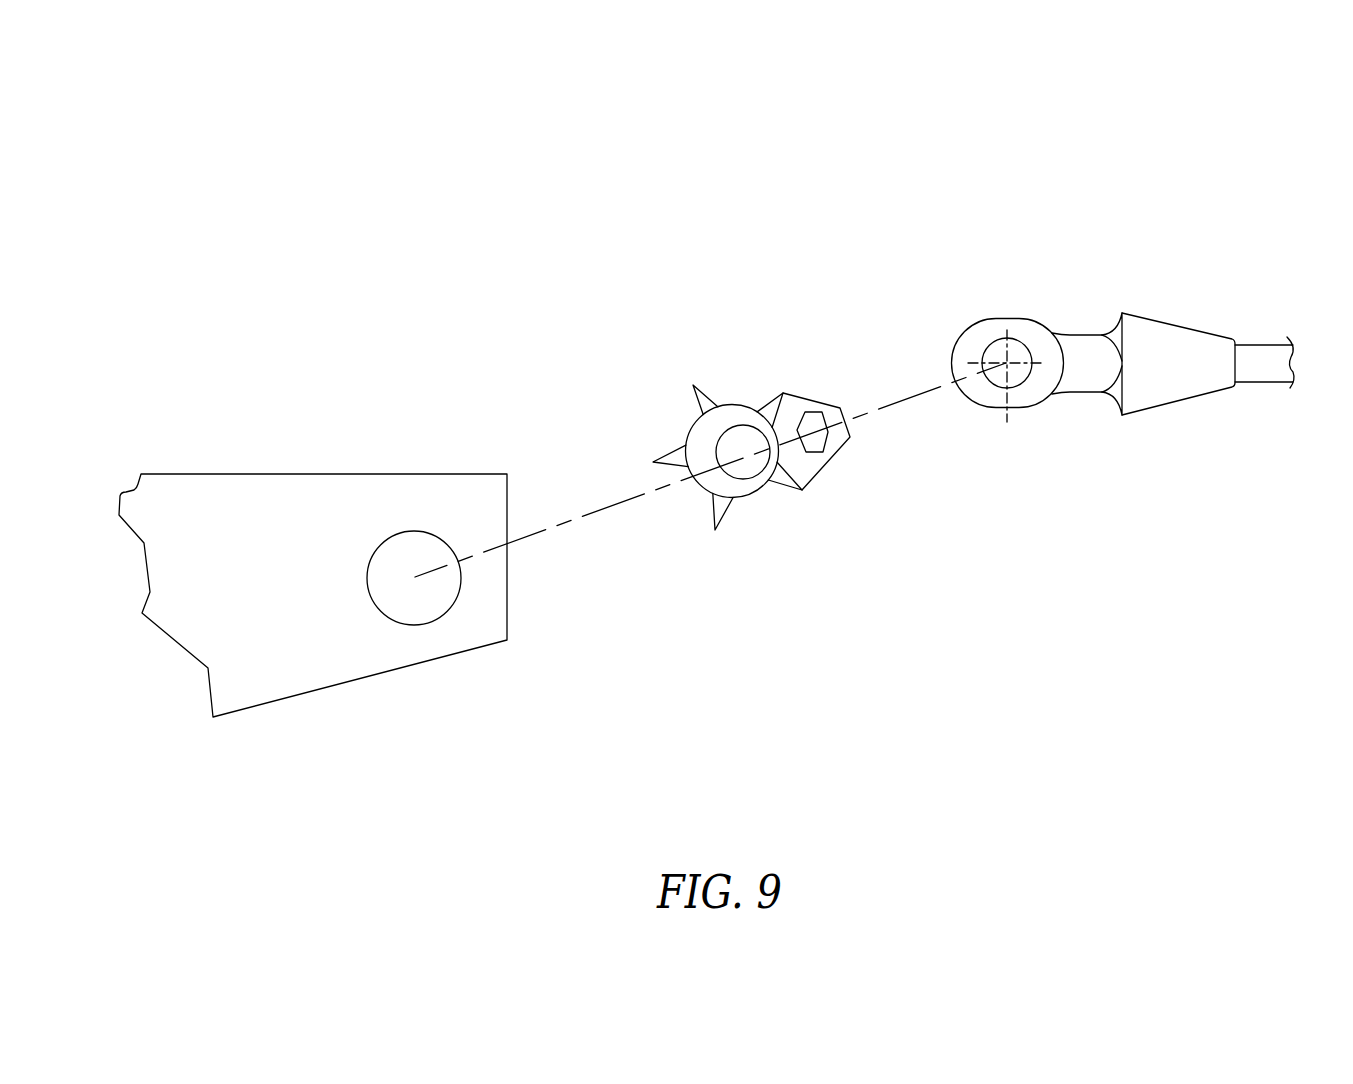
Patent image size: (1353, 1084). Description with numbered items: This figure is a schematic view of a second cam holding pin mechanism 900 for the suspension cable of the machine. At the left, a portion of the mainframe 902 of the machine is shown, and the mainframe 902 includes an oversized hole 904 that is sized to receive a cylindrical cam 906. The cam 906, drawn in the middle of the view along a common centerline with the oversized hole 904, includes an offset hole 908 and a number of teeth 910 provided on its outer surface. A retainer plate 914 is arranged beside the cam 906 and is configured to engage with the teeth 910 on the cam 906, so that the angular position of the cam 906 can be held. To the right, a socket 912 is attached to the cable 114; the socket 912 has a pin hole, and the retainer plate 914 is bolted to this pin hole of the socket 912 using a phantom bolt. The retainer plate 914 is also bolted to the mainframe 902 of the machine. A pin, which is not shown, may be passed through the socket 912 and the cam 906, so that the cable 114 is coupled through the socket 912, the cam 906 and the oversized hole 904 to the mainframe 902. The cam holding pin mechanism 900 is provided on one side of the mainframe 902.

The cam holding pin mechanism 900 is at (1103, 128).
The mainframe 902 is at (329, 487).
The oversized hole 904 is at (415, 617).
The cylindrical cam 906 is at (737, 412).
The offset hole 908 is at (745, 463).
The teeth 910 is at (724, 508).
The socket 912 is at (1055, 313).
The retainer plate 914 is at (815, 401).
The cable 114 is at (1263, 348).